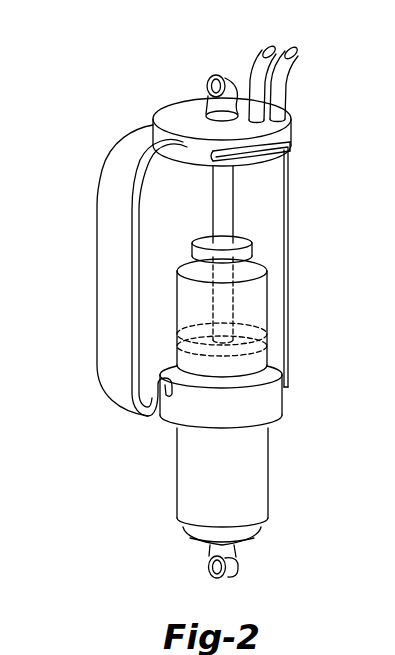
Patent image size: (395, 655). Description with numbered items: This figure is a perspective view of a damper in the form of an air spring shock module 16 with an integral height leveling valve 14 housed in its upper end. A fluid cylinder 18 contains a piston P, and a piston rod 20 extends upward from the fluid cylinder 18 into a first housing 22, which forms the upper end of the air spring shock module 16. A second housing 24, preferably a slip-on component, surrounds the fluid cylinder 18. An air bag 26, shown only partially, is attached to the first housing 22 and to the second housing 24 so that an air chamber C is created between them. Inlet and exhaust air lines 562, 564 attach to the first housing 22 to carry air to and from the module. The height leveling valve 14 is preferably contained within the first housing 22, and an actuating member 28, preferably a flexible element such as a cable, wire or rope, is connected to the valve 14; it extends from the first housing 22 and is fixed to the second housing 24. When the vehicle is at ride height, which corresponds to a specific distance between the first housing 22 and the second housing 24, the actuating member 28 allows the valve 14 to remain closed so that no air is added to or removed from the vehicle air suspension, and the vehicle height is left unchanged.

The air spring shock module 16 is at (203, 297).
The first housing 22 is at (290, 133).
The height leveling valve 14 is at (292, 146).
The inlet air line 562 is at (255, 64).
The exhaust air line 564 is at (297, 60).
The piston rod 20 is at (232, 192).
The air bag 26 is at (110, 257).
The actuating member 28 is at (288, 315).
The second housing 24 is at (273, 407).
The fluid cylinder 18 is at (252, 478).
The piston P is at (193, 340).
The air chamber C is at (186, 226).